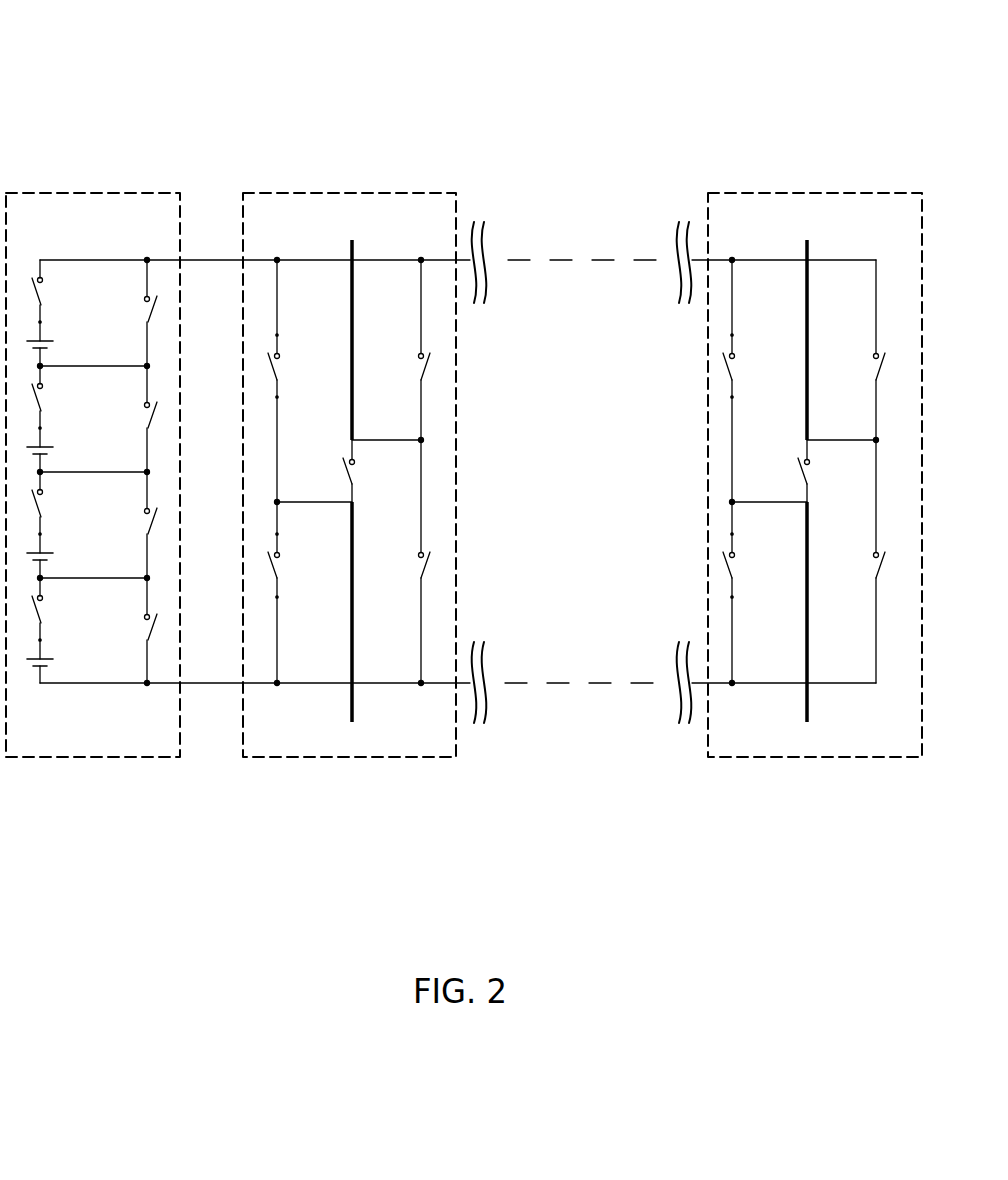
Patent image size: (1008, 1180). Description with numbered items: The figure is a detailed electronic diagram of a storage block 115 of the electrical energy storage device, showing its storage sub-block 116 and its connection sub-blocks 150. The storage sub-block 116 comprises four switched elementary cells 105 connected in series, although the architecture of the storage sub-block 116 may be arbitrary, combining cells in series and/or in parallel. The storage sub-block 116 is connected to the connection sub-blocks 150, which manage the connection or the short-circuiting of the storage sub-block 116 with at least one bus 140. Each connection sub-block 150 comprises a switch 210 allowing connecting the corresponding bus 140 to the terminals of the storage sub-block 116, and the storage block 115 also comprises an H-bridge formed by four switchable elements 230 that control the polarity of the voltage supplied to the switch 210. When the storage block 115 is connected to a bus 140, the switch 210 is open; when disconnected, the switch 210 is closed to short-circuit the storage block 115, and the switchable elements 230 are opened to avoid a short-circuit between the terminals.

The storage block 115 is at (162, 80).
The storage sub-block 116 is at (107, 192).
The switched elementary cell 105 is at (92, 472).
The connection sub-block 150 is at (335, 192).
The switchable element 230 is at (268, 373).
The switch 210 is at (358, 475).
The bus 140 is at (352, 707).